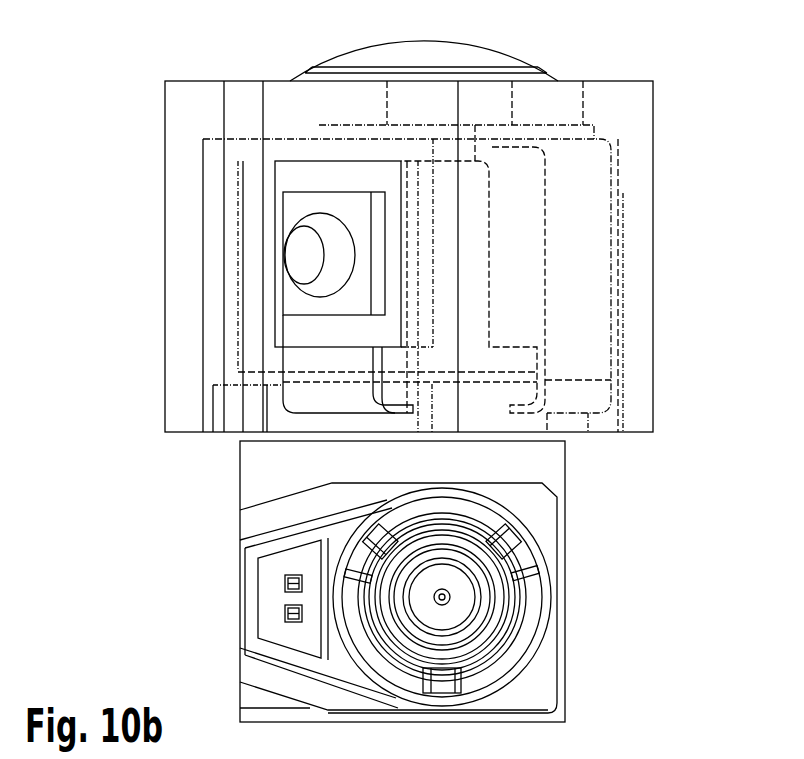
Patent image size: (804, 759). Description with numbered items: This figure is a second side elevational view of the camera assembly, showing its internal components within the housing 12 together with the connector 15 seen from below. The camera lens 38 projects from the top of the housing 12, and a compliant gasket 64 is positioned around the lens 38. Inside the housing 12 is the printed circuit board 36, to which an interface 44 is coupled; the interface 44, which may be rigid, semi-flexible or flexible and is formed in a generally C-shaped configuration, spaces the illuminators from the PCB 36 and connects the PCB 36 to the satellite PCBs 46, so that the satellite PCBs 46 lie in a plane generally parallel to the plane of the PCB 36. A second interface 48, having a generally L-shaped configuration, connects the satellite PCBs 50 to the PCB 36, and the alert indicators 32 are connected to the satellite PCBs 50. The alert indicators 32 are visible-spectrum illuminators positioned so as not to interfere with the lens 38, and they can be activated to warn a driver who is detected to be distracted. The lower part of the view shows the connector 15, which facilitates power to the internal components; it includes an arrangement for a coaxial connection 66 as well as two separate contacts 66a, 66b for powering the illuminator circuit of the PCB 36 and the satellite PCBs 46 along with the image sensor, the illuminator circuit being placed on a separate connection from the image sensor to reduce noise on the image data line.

The housing 12 is at (653, 253).
The connector 15 is at (588, 603).
The alert indicators 32 is at (300, 255).
The printed circuit board 36 is at (560, 420).
The camera lens 38 is at (443, 52).
The interface 44 is at (582, 322).
The satellite PCBs 46 is at (583, 132).
The second interface 48 is at (298, 363).
The satellite PCBs 50 is at (298, 176).
The compliant gasket 64 is at (550, 77).
The coaxial connection 66 is at (458, 606).
The first contact 66a is at (285, 583).
The second contact 66b is at (285, 613).